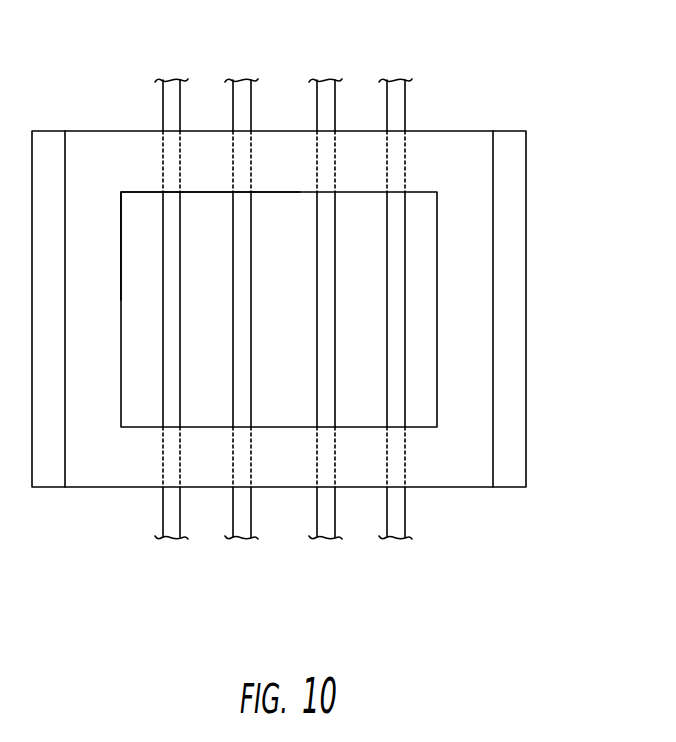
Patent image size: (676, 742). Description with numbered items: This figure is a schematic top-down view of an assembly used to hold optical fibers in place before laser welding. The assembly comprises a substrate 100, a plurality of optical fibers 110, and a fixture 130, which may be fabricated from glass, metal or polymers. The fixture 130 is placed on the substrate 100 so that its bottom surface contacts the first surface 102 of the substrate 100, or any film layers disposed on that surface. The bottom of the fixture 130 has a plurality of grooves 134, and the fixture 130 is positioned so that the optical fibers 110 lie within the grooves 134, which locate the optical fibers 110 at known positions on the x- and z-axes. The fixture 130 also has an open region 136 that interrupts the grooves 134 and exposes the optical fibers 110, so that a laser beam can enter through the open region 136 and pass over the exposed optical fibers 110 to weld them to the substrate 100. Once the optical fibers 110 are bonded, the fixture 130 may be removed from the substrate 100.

The substrate 100 is at (316, 296).
The first surface 102 is at (303, 253).
The optical fibers 110 is at (236, 63).
The fixture 130 is at (124, 110).
The grooves 134 is at (231, 460).
The open region 136 is at (142, 198).